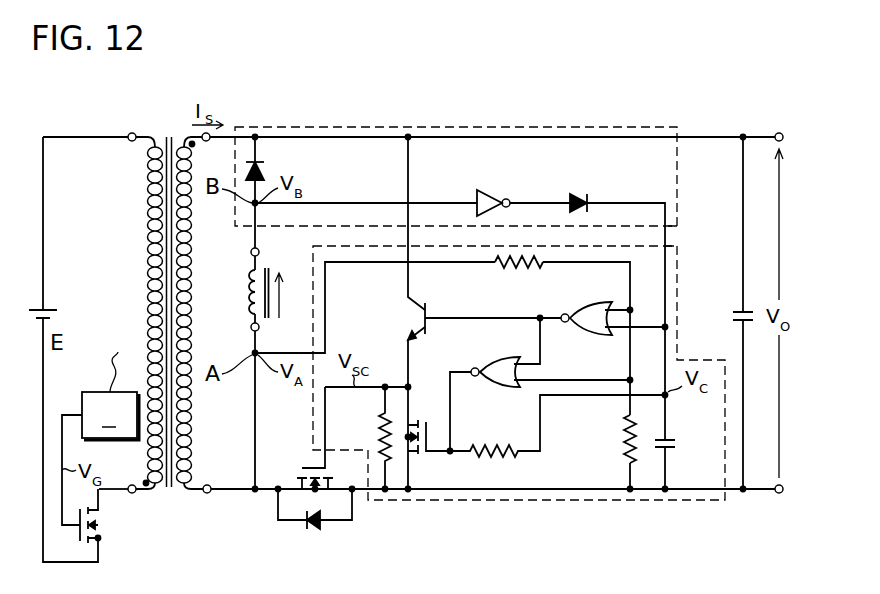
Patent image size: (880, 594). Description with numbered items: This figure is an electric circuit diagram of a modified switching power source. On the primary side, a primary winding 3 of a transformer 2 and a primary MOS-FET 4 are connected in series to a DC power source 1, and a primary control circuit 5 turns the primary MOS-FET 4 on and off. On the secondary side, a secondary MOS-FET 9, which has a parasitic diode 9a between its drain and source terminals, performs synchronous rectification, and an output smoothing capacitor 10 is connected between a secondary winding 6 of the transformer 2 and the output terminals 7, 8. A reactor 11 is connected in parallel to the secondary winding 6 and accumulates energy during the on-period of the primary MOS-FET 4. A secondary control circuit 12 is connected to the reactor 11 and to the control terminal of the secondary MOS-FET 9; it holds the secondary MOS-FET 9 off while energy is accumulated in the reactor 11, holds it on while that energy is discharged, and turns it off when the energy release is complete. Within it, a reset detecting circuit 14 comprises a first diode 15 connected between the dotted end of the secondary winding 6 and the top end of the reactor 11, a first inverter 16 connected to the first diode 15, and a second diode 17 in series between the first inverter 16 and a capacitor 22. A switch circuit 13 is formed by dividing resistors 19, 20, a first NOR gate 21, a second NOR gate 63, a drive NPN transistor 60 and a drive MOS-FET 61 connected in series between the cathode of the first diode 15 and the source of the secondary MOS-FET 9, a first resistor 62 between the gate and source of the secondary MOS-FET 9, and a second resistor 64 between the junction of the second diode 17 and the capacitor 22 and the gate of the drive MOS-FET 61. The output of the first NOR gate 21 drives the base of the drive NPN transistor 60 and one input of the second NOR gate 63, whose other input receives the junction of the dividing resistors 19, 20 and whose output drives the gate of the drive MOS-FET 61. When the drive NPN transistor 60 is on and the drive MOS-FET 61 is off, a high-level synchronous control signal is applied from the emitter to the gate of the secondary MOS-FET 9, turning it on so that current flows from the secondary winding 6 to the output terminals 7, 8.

The DC power source 1 is at (58, 292).
The transformer 2 is at (170, 137).
The primary winding 3 is at (148, 272).
The primary MOS-FET 4 is at (96, 527).
The primary control circuit 5 is at (100, 364).
The secondary winding 6 is at (193, 428).
The output terminal 7 is at (779, 133).
The negative output terminal 8 is at (779, 494).
The secondary MOS-FET 9 is at (300, 468).
The parasitic diode 9a is at (314, 530).
The output smoothing capacitor 10 is at (732, 308).
The reactor 11 is at (248, 294).
The secondary control circuit 12 is at (703, 120).
The switch circuit 13 is at (549, 509).
The reset detecting circuit 14 is at (684, 191).
The first diode 15 is at (262, 170).
The first inverter 16 is at (490, 192).
The second diode 17 is at (578, 194).
The dividing resistor 19 is at (520, 270).
The dividing resistor 20 is at (622, 450).
The first NOR gate 21 is at (592, 338).
The capacitor 22 is at (678, 445).
The drive NPN transistor 60 is at (412, 313).
The drive MOS-FET 61 is at (421, 455).
The first resistor 62 is at (376, 420).
The second NOR gate 63 is at (498, 358).
The second resistor 64 is at (492, 445).